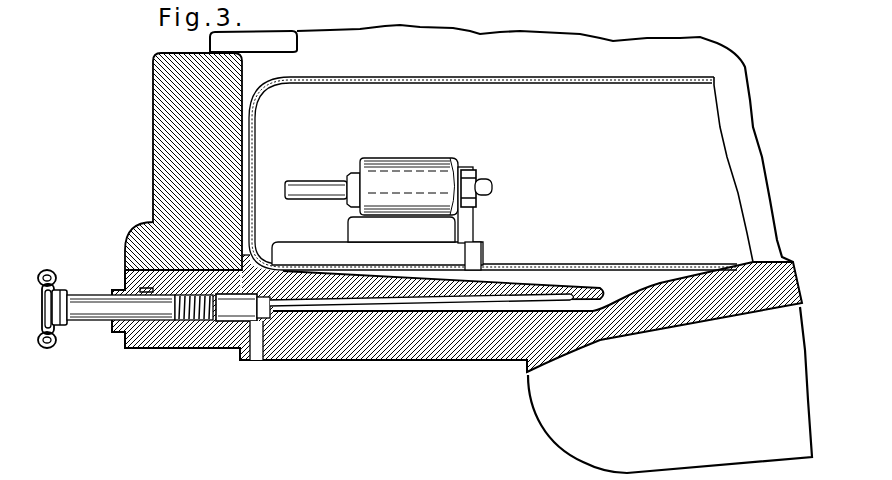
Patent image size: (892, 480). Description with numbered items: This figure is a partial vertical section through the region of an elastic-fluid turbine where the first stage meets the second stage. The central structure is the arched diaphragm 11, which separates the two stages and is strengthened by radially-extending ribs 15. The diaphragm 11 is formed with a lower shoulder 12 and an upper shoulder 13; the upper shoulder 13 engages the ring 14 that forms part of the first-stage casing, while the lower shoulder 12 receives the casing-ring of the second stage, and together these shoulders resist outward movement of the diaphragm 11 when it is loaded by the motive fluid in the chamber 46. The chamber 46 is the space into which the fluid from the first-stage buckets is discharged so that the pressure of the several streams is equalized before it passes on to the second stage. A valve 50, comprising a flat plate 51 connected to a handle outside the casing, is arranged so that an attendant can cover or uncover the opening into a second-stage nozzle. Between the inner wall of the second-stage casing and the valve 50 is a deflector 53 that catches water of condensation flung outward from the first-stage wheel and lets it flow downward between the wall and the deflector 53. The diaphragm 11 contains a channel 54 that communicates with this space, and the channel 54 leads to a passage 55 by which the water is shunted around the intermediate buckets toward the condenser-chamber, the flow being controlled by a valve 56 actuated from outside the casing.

The diaphragm 11 is at (437, 323).
The lower shoulder 12 is at (237, 352).
The upper shoulder 13 is at (253, 257).
The ring 14 is at (168, 198).
The radially-extending ribs 15 is at (670, 390).
The chamber 46 is at (501, 143).
The valve 50 is at (427, 158).
The flat plate 51 is at (462, 222).
The deflector 53 is at (320, 92).
The channel 54 is at (368, 306).
The passage 55 is at (257, 347).
The valve 56 is at (90, 306).